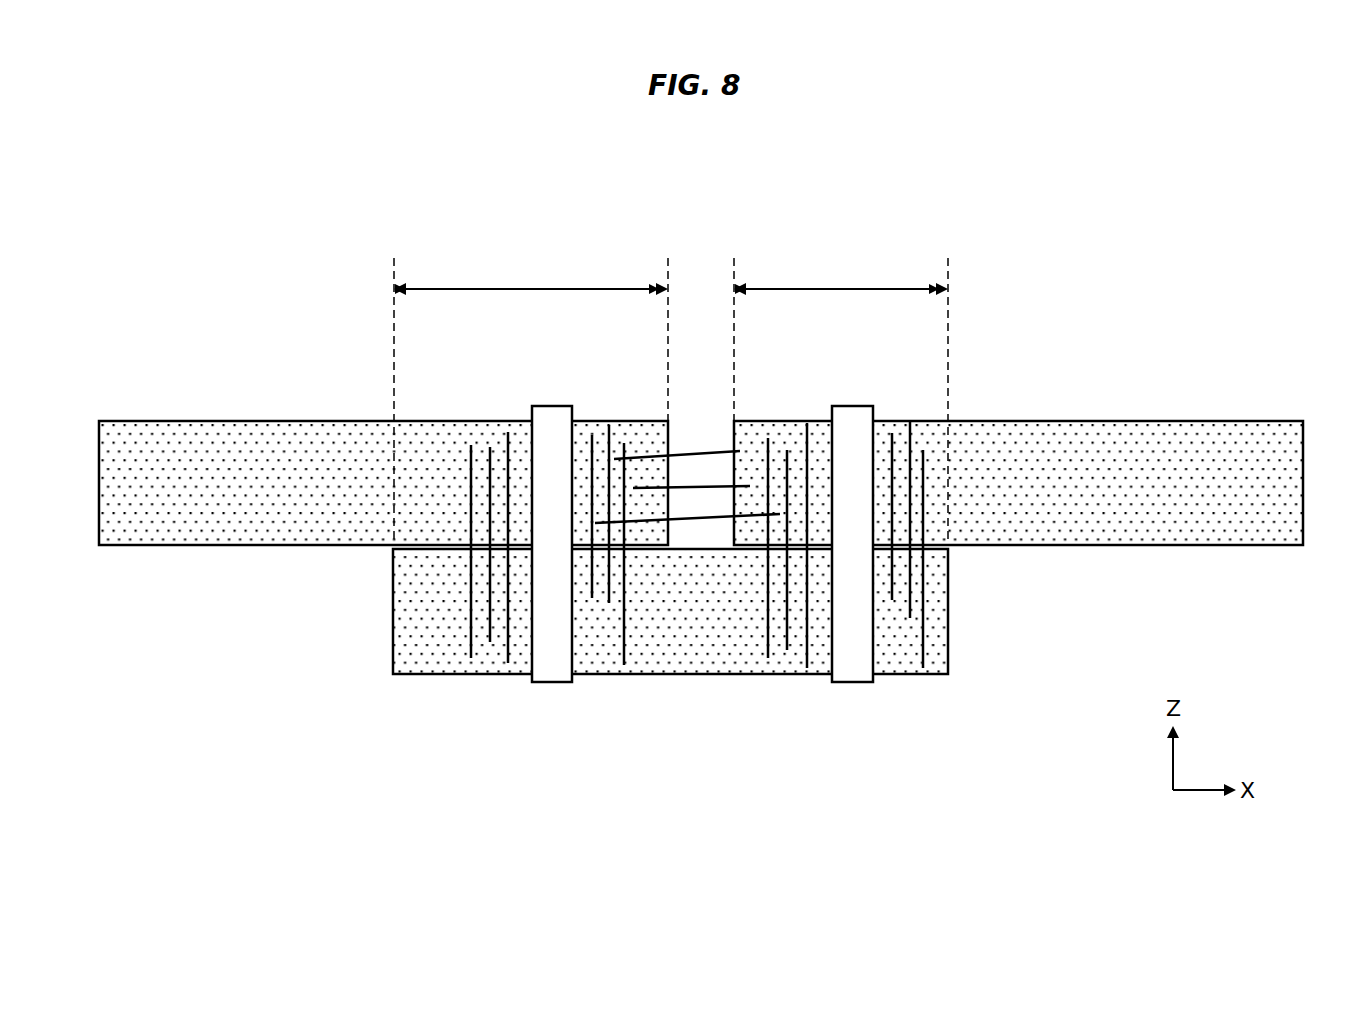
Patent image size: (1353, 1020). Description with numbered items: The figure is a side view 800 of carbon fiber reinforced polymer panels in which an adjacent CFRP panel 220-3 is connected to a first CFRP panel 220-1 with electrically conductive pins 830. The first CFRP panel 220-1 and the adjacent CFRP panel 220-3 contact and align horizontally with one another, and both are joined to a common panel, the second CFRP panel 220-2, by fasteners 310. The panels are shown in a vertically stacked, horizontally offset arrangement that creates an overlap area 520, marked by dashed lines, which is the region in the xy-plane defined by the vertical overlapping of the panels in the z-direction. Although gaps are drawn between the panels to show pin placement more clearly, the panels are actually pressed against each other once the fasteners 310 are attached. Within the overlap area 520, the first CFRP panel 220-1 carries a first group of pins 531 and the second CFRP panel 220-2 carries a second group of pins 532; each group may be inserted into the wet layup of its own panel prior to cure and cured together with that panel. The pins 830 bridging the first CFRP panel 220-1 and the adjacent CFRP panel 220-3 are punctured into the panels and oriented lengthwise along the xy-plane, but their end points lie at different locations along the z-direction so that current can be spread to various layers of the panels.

The side view 800 is at (375, 212).
The first CFRP panel 220-1 is at (195, 420).
The second CFRP panel 220-2 is at (392, 617).
The adjacent CFRP panel 220-3 is at (1057, 420).
The fastener 310 is at (553, 406).
The overlap area 520 is at (505, 289).
The first group of pins 531 is at (508, 432).
The second group of pins 532 is at (471, 658).
The pins 830 is at (713, 517).